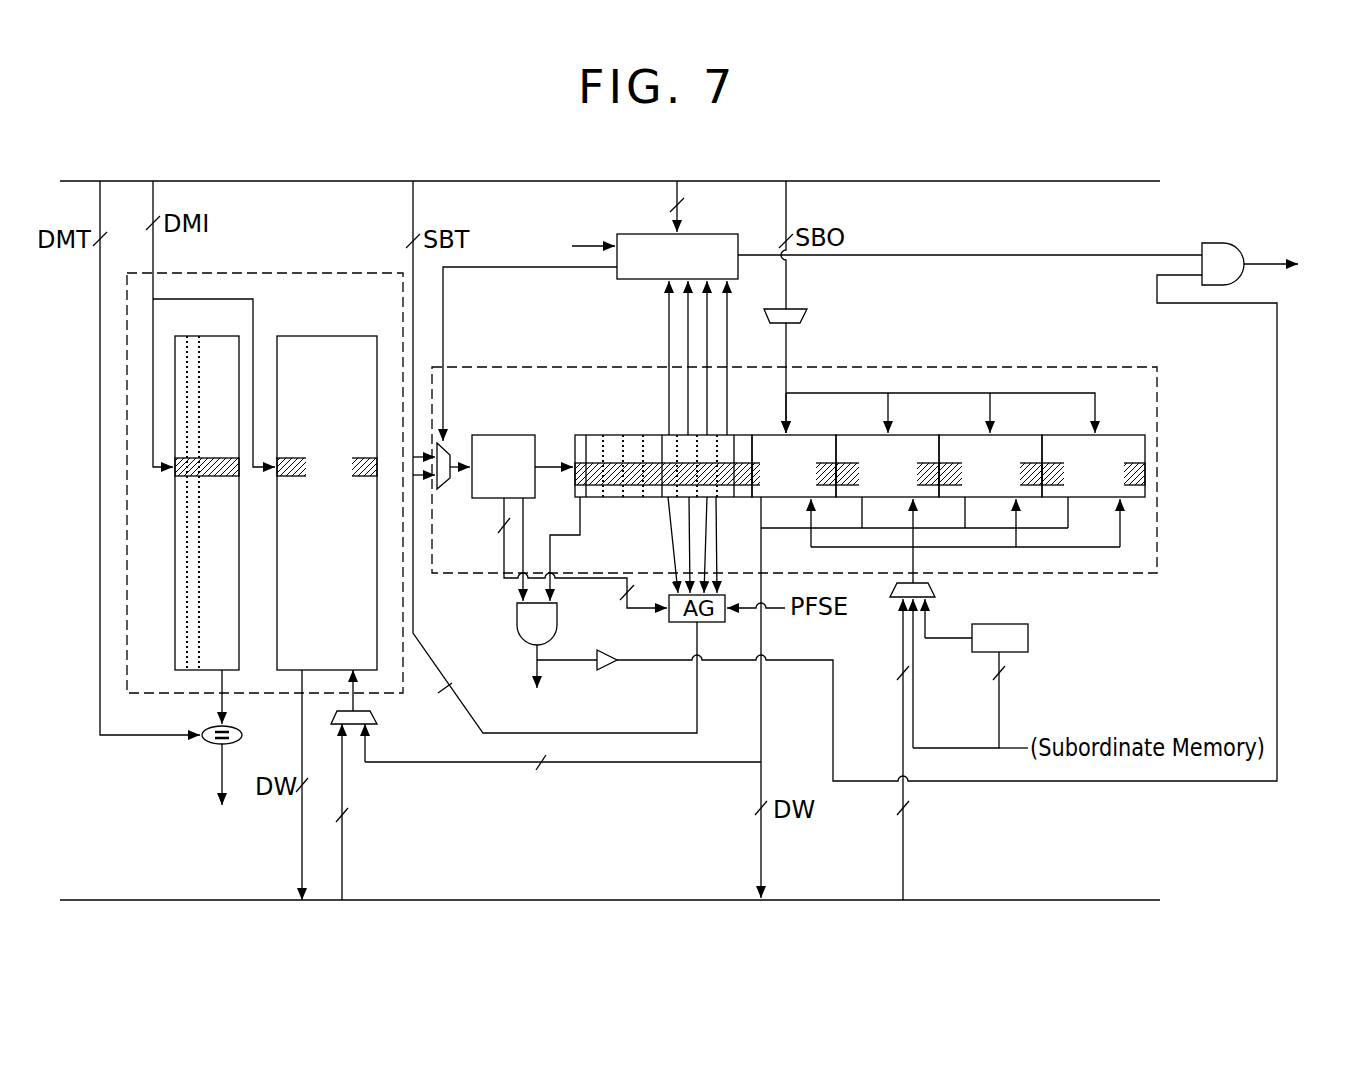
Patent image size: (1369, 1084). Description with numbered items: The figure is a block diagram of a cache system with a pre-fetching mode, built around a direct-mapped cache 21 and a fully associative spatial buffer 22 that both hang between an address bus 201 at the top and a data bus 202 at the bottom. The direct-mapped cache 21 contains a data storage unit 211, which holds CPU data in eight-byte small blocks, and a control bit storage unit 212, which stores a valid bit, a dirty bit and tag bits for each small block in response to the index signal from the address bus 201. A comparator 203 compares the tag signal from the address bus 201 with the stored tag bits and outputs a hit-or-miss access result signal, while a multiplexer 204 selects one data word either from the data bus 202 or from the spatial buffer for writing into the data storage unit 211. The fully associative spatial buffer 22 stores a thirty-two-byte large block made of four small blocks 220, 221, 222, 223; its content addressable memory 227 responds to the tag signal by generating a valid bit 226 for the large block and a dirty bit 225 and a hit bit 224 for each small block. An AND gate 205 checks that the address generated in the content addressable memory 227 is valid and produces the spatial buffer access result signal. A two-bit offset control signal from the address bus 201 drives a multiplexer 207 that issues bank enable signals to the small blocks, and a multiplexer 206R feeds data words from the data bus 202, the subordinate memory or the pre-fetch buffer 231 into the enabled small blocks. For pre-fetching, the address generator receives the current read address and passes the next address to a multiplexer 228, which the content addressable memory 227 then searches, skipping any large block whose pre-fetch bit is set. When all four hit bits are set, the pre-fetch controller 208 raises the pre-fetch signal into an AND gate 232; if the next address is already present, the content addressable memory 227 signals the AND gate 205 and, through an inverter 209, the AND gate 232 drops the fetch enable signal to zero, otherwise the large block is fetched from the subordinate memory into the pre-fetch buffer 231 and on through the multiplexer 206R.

The address bus 201 is at (1100, 181).
The data bus 202 is at (1103, 900).
The direct-mapped cache 21 is at (263, 272).
The data storage unit 211 is at (366, 336).
The control bit storage unit 212 is at (177, 617).
The comparator 203 is at (206, 747).
The multiplexer 204 is at (377, 717).
The AND gate 205 is at (558, 624).
The multiplexer 206R is at (935, 592).
The multiplexer 207 is at (807, 314).
The pre-fetch controller 208 is at (645, 234).
The inverter 209 is at (615, 668).
The fully associative spatial buffer 22 is at (1157, 378).
The small block 220 is at (1118, 424).
The small block 221 is at (1022, 424).
The small block 222 is at (911, 437).
The small block 223 is at (811, 437).
The hit bit 224 is at (709, 498).
The dirty bit 225 is at (641, 497).
The valid bit 226 is at (574, 492).
The content addressable memory 227 is at (518, 436).
The multiplexer 228 is at (446, 490).
The pre-fetch buffer 231 is at (1028, 630).
The AND gate 232 is at (1238, 242).